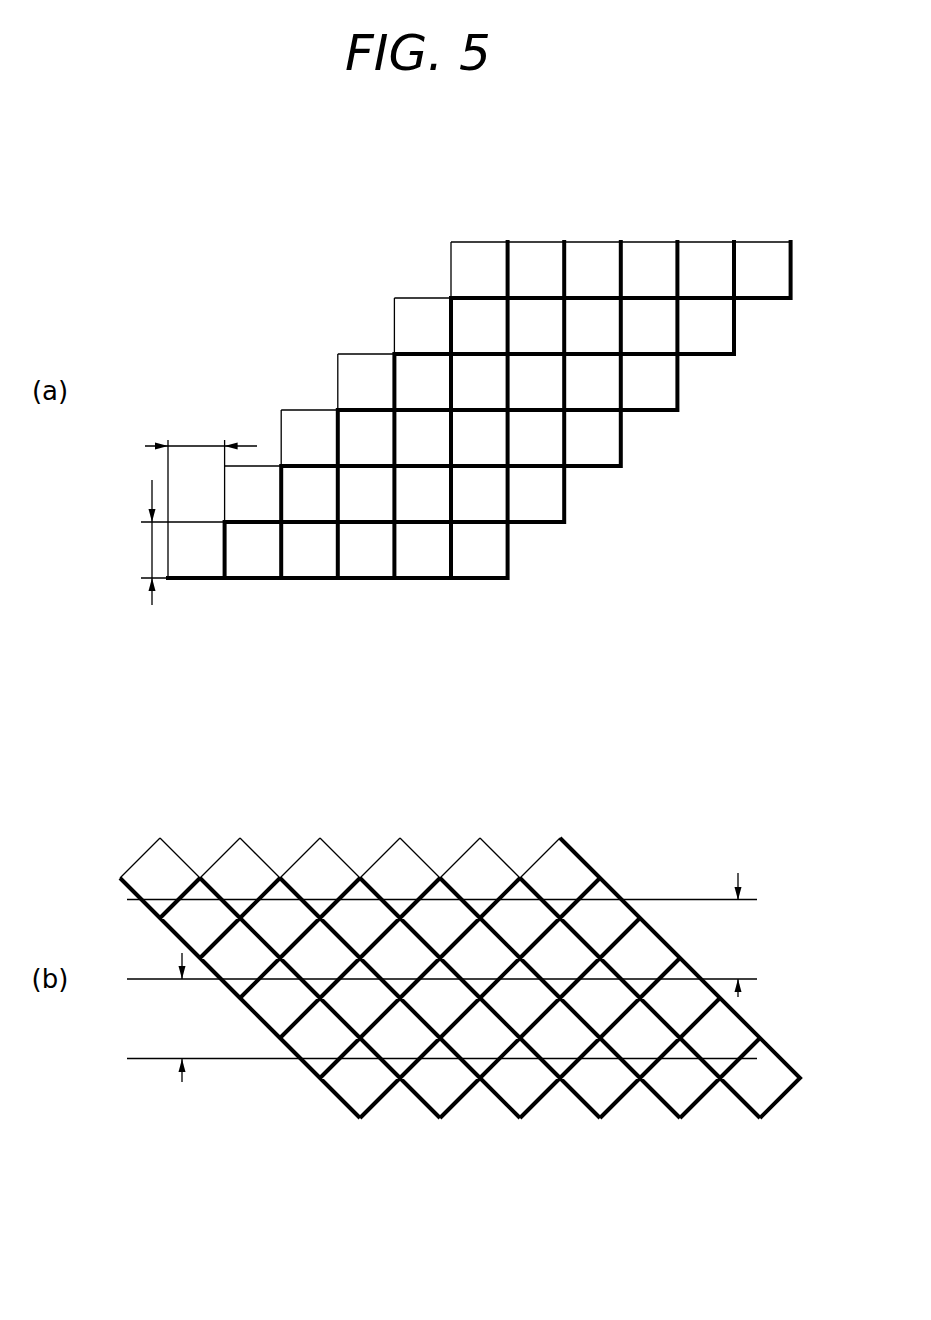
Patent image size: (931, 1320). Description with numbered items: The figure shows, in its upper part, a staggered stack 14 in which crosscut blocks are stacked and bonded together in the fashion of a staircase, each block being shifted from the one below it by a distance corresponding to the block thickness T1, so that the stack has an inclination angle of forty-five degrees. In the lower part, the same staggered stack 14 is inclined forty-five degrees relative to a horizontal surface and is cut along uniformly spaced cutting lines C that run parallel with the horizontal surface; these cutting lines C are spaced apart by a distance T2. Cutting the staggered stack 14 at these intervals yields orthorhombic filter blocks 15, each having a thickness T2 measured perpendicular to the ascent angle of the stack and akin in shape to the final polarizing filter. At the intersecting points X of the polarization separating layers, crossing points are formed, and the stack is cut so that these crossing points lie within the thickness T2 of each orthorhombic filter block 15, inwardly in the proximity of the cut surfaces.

The staggered stack 14 is at (607, 236).
The orthorhombic filter block 15 is at (622, 886).
The thickness T1 is at (186, 507).
The interval T2 is at (441, 977).
The cutting lines C is at (427, 979).
The intersecting points X is at (237, 913).